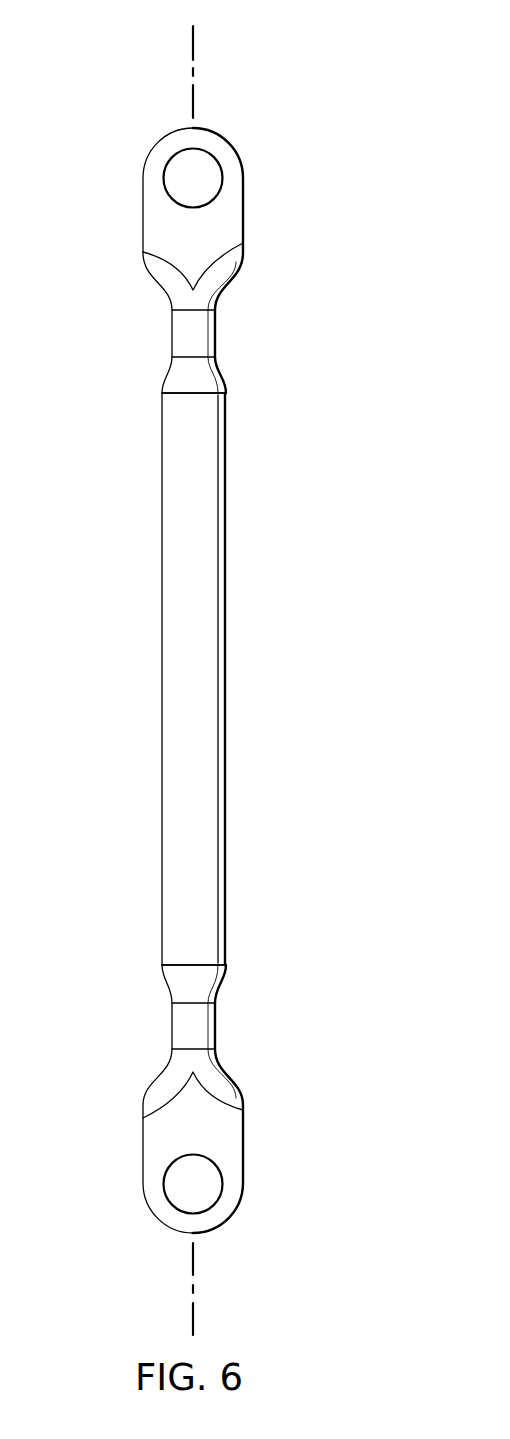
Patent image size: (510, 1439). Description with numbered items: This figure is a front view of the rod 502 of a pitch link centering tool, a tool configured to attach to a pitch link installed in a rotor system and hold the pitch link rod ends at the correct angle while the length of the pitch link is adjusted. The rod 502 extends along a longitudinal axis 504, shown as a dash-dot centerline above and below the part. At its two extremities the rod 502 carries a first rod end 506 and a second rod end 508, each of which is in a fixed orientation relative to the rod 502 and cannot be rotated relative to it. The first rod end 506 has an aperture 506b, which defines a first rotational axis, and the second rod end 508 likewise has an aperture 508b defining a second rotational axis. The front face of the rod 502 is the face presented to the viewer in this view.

The rod 502 is at (162, 686).
The longitudinal axis 504 is at (193, 45).
The first rod end 506 is at (143, 1142).
The aperture 506b is at (170, 1200).
The second rod end 508 is at (143, 223).
The aperture 508b is at (170, 162).